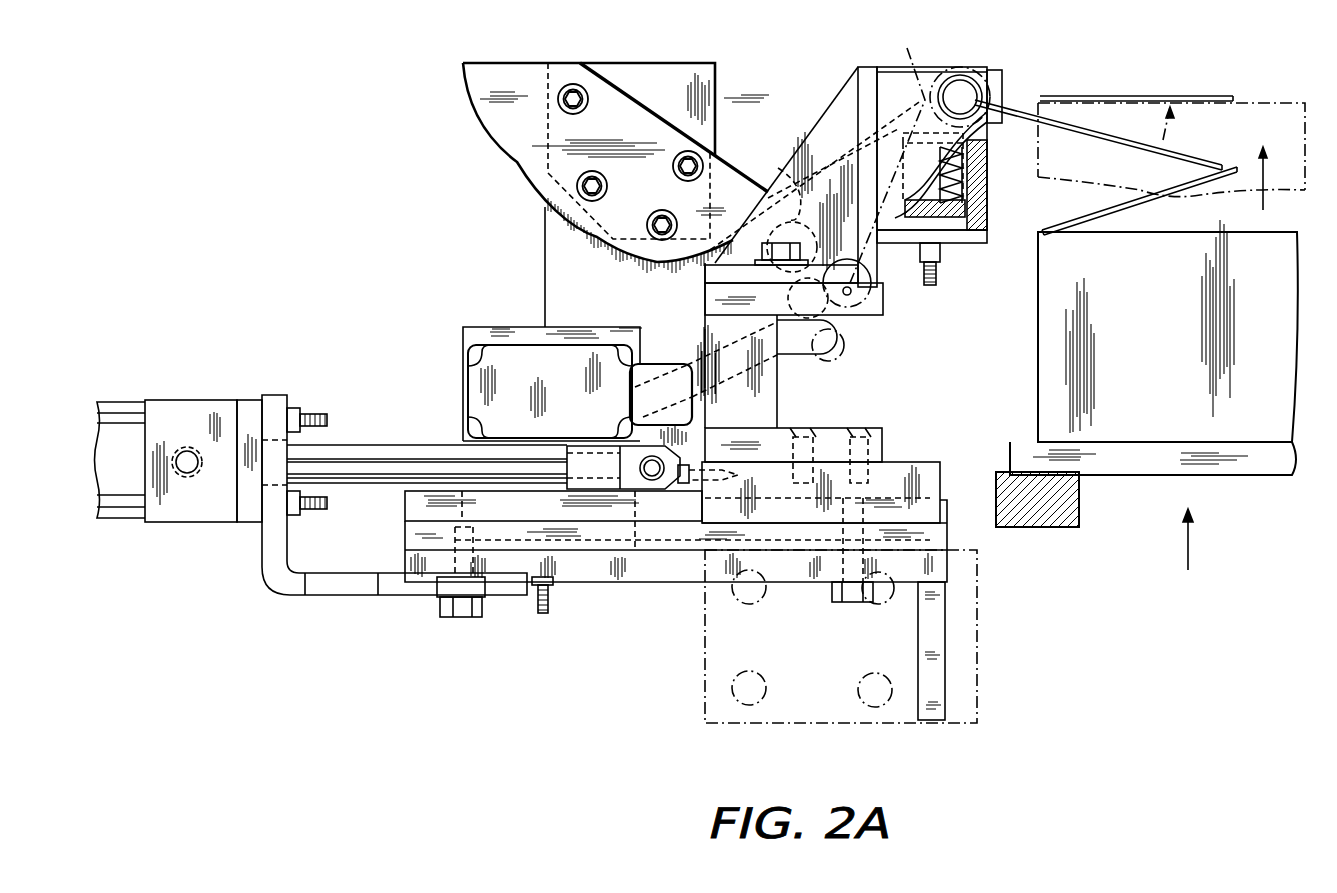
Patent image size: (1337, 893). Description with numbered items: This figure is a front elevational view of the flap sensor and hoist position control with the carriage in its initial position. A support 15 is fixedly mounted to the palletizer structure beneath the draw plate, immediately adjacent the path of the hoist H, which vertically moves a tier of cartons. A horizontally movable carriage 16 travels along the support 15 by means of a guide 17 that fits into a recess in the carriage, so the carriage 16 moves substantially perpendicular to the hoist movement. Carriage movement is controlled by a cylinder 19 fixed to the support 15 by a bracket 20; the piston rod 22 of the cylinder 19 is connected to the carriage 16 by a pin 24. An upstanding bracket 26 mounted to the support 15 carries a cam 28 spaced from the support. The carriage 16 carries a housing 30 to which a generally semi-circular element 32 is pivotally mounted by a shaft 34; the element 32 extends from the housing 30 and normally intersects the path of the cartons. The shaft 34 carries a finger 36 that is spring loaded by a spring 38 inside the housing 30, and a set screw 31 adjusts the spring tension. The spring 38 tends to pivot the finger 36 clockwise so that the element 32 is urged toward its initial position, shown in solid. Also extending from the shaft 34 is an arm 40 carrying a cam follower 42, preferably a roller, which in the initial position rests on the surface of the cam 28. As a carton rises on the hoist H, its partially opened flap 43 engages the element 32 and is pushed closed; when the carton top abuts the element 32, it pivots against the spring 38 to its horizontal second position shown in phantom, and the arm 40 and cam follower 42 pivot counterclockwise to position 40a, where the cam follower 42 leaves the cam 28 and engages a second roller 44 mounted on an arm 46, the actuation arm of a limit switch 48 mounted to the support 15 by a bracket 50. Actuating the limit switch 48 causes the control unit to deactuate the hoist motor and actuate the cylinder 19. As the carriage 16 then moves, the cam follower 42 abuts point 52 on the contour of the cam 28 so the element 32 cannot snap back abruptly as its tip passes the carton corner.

The support 15 is at (975, 615).
The carriage 16 is at (895, 472).
The guide 17 is at (905, 512).
The cylinder 19 is at (197, 404).
The bracket 20 is at (348, 578).
The piston rod 22 is at (378, 452).
The pin 24 is at (653, 456).
The upstanding bracket 26 is at (553, 272).
The cam 28 is at (487, 118).
The housing 30 is at (867, 90).
The set screw 31 is at (947, 261).
The semi-circular element 32 is at (1100, 132).
The shaft 34 is at (960, 87).
The finger 36 is at (926, 156).
The spring 38 is at (963, 172).
The arm 40 is at (843, 173).
The position of arm 40a is at (873, 292).
The cam follower 42 is at (790, 173).
The flap 43 is at (1140, 196).
The roller 44 is at (840, 337).
The actuation arm 46 is at (695, 364).
The limit switch 48 is at (557, 376).
The bracket 50 is at (467, 335).
The point on cam contour 52 is at (655, 262).
The hoist H is at (1060, 528).